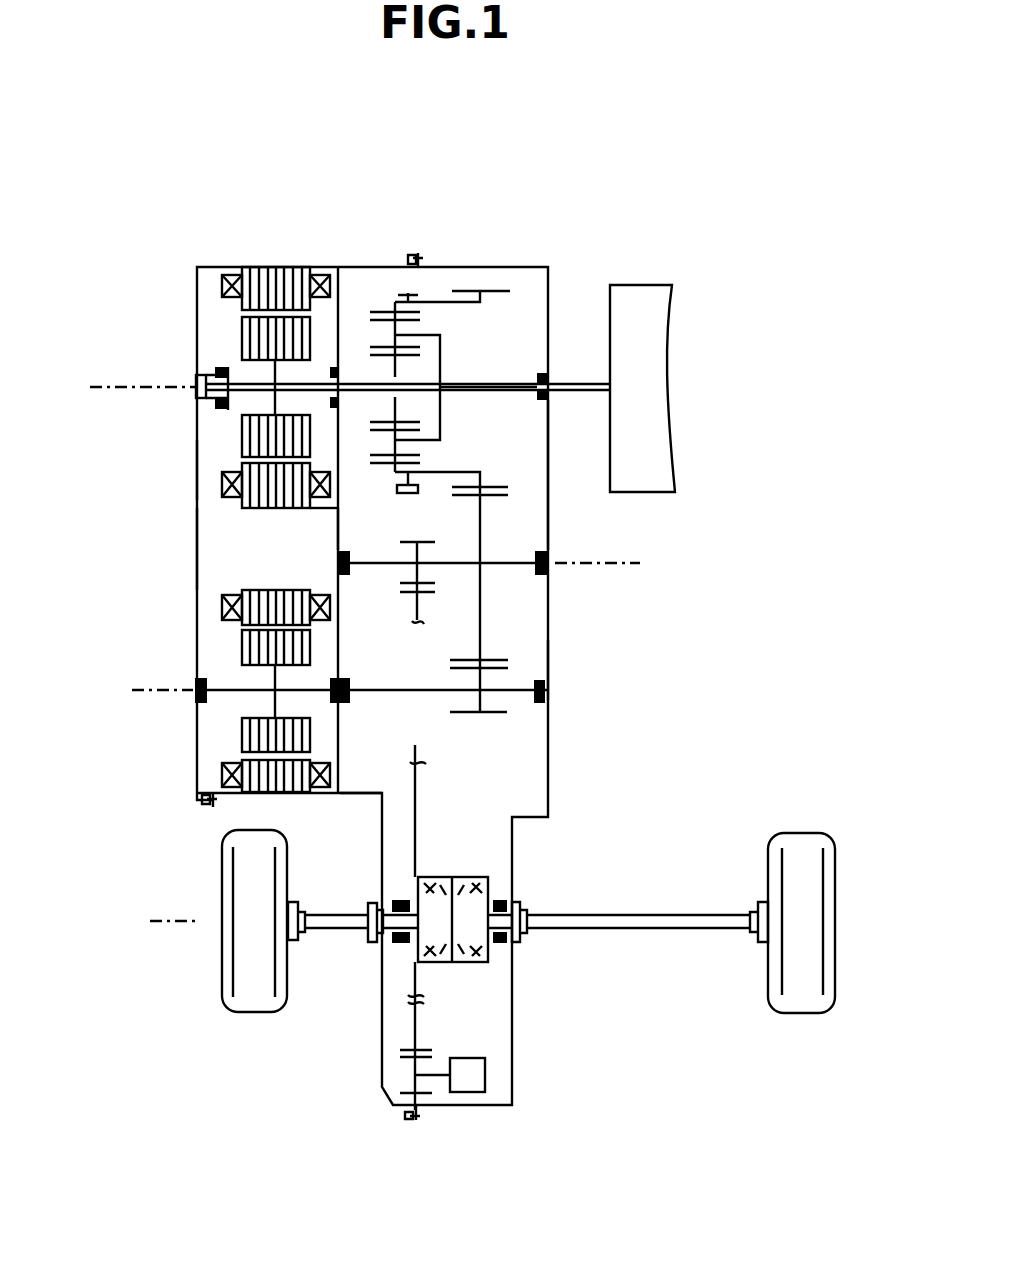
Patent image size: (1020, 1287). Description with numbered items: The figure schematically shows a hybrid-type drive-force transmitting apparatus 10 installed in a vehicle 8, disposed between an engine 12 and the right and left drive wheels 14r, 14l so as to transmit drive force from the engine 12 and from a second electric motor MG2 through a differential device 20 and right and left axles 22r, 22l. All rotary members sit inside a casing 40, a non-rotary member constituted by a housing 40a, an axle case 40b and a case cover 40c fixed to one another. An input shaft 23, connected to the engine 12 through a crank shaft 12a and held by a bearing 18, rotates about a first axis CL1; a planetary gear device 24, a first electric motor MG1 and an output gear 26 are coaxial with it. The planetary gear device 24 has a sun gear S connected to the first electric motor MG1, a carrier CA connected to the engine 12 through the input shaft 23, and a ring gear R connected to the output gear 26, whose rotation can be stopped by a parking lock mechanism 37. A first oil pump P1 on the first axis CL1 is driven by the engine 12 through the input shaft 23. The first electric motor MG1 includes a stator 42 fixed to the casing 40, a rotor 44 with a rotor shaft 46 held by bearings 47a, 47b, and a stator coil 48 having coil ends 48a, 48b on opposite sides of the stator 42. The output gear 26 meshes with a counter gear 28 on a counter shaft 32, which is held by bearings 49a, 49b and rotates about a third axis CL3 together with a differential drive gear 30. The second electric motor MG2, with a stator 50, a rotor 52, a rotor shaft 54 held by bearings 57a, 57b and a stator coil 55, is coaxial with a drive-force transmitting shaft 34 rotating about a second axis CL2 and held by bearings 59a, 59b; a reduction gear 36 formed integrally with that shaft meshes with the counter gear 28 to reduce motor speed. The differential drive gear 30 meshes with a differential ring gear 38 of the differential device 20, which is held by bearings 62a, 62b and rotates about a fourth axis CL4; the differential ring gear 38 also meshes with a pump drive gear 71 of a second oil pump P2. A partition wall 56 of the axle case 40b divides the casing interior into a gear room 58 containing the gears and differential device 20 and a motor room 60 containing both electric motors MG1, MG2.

The vehicle 8 is at (612, 153).
The drive-force transmitting apparatus 10 is at (423, 202).
The engine 12 is at (663, 485).
The crank shaft 12a is at (572, 385).
The left drive wheel 14l is at (257, 1000).
The right drive wheel 14r is at (803, 1002).
The bearing 18 is at (538, 398).
The differential device 20 is at (452, 889).
The left axle 22l is at (335, 918).
The right axle 22r is at (645, 920).
The input shaft 23 is at (490, 385).
The planetary gear device 24 is at (431, 391).
The output gear 26 is at (470, 291).
The counter gear 28 is at (453, 492).
The differential drive gear 30 is at (425, 545).
The counter shaft 32 is at (462, 567).
The drive-force transmitting shaft 34 is at (372, 697).
The reduction gear 36 is at (478, 720).
The parking lock mechanism 37 is at (402, 494).
The differential ring gear 38 is at (410, 590).
The casing 40 is at (515, 262).
The housing 40a is at (549, 678).
The axle case 40b is at (362, 794).
The case cover 40c is at (197, 473).
The stator 42 is at (250, 280).
The rotor 44 is at (238, 352).
The rotor shaft 46 is at (231, 408).
The bearing 47a is at (225, 408).
The bearing 47b is at (337, 372).
The stator coil 48 is at (232, 302).
The coil end 48a is at (232, 275).
The coil end 48b is at (326, 273).
The bearing 49a is at (338, 568).
The bearing 49b is at (548, 570).
The stator 50 is at (235, 711).
The rotor 52 is at (232, 726).
The rotor shaft 54 is at (231, 691).
The stator coil 55 is at (215, 775).
The partition wall 56 is at (338, 530).
The bearing 57a is at (195, 683).
The bearing 57b is at (334, 682).
The gear room 58 is at (518, 528).
The bearing 59a is at (352, 688).
The bearing 59b is at (548, 699).
The motor room 60 is at (230, 535).
The bearing 62a is at (400, 942).
The bearing 62b is at (534, 935).
The pump drive gear 71 is at (422, 1103).
The first electric motor MG1 is at (250, 354).
The second electric motor MG2 is at (235, 697).
The first oil pump P1 is at (195, 383).
The second oil pump P2 is at (450, 1075).
The sun gear S is at (385, 425).
The ring gear R is at (380, 467).
The carrier CA is at (432, 338).
The first axis CL1 is at (105, 388).
The second axis CL2 is at (142, 697).
The third axis CL3 is at (605, 570).
The fourth axis CL4 is at (170, 925).